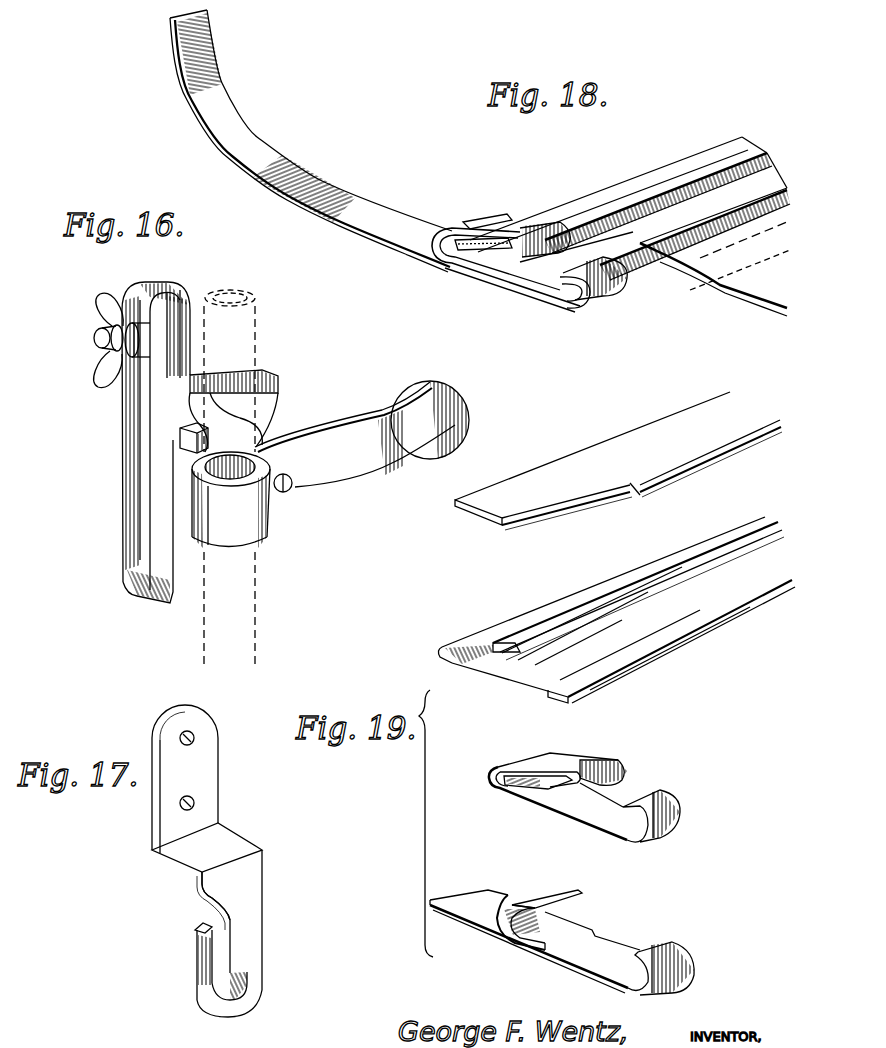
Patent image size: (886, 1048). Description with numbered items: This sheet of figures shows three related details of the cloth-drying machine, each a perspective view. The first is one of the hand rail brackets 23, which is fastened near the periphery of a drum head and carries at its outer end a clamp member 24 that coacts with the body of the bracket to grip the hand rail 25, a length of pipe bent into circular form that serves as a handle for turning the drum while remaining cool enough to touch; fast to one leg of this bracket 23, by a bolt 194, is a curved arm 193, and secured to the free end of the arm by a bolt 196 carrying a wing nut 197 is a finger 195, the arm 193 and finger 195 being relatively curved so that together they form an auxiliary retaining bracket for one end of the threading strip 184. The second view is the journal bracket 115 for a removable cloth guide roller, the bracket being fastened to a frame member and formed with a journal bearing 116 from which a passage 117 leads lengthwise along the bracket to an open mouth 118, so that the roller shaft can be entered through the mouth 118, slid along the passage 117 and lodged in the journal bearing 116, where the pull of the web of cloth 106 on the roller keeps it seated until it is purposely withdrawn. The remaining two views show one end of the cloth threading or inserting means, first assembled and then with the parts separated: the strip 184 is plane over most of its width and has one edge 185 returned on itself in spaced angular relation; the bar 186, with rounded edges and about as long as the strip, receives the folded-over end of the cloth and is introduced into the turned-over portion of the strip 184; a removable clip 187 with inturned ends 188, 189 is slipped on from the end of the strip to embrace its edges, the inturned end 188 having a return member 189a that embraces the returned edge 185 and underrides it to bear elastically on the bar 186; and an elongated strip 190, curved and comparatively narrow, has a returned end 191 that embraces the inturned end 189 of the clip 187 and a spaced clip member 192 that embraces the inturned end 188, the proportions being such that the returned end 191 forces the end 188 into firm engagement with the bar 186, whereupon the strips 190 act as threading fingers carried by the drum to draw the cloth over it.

In FIG. 18, the elongated strip 190 is at (362, 224).
In FIG. 19, the elongated strip 190 is at (467, 899).
In FIG. 18, the edge 185 is at (593, 203).
In FIG. 19, the edge 185 is at (524, 621).
In FIG. 18, the bar 186 is at (708, 207).
In FIG. 19, the bar 186 is at (567, 470).
In FIG. 18, the strip 184 is at (647, 260).
In FIG. 19, the strip 184 is at (620, 645).
In FIG. 18, the web of cloth 106 is at (768, 290).
In FIG. 18, the clip member 192 is at (477, 202).
In FIG. 19, the clip member 192 is at (548, 900).
In FIG. 18, the inturned end 188 is at (530, 220).
In FIG. 19, the inturned end 188 is at (573, 757).
In FIG. 18, the removable clip 187 is at (520, 284).
In FIG. 19, the removable clip 187 is at (562, 820).
In FIG. 18, the return member 189a is at (503, 252).
In FIG. 19, the return member 189a is at (552, 795).
In FIG. 18, the inturned end 189 is at (563, 304).
In FIG. 19, the inturned end 189 is at (663, 801).
In FIG. 18, the returned end 191 is at (598, 278).
In FIG. 19, the returned end 191 is at (670, 945).
In FIG. 16, the hand rail 25 is at (257, 588).
In FIG. 16, the finger 195 is at (118, 512).
In FIG. 16, the bolt 196 is at (96, 340).
In FIG. 16, the wing nut 197 is at (95, 368).
In FIG. 16, the curved arm 193 is at (190, 384).
In FIG. 16, the bolt 194 is at (184, 441).
In FIG. 16, the clamp member 24 is at (262, 505).
In FIG. 16, the bracket 23 is at (338, 431).
In FIG. 17, the journal bracket 115 is at (255, 895).
In FIG. 17, the mouth 118 is at (207, 912).
In FIG. 17, the passage 117 is at (218, 949).
In FIG. 17, the journal bearing 116 is at (233, 1002).